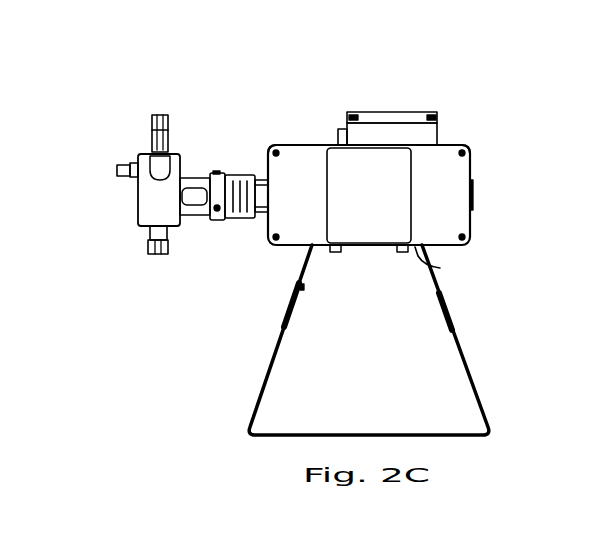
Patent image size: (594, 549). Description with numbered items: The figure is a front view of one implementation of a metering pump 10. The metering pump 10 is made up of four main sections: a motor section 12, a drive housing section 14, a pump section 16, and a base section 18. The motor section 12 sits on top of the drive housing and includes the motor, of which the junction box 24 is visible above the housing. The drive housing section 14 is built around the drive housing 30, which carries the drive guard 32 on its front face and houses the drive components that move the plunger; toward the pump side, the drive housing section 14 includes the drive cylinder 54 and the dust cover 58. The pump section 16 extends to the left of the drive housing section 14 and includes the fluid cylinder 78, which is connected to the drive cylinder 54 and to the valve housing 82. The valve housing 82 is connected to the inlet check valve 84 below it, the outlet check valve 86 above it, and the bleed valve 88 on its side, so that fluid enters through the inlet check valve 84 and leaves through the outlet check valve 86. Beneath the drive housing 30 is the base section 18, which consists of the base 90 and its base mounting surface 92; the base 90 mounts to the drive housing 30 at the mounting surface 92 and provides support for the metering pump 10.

The metering pump 10 is at (530, 100).
The motor section 12 is at (340, 109).
The drive housing section 14 is at (467, 140).
The pump section 16 is at (230, 141).
The base section 18 is at (238, 367).
The junction box 24 is at (393, 112).
The drive housing 30 is at (471, 227).
The drive guard 32 is at (453, 195).
The drive cylinder 54 is at (265, 213).
The dust cover 58 is at (235, 218).
The fluid cylinder 78 is at (193, 217).
The valve housing 82 is at (137, 218).
The inlet check valve 84 is at (143, 250).
The outlet check valve 86 is at (140, 135).
The bleed valve 88 is at (121, 182).
The base 90 is at (483, 402).
The base mounting surface 92 is at (440, 268).